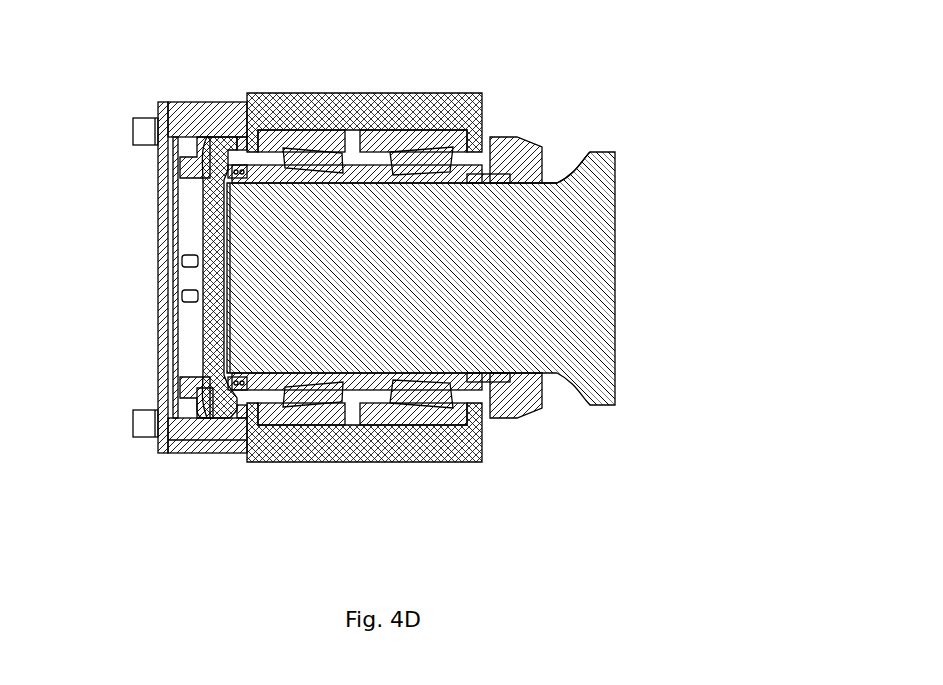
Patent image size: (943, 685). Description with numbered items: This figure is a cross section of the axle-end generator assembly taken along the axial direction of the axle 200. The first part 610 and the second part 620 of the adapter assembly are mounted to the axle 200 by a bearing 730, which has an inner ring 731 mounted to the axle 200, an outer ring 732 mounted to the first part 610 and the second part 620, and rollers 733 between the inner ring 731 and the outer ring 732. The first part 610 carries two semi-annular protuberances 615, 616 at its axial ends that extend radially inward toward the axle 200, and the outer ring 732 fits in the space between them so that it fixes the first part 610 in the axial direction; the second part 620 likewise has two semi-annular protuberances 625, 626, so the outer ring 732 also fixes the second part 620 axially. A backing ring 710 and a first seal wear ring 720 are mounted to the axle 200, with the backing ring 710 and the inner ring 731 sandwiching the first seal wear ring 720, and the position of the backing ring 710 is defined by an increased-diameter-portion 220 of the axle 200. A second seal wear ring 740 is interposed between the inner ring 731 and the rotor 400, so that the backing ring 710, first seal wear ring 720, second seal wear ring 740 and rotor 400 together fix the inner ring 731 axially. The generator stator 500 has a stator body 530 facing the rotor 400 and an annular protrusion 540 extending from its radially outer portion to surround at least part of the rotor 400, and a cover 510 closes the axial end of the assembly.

The axle 200 is at (560, 278).
The increased-diameter-portion 220 is at (531, 380).
The rotor 400 is at (205, 323).
The stator 500 is at (183, 130).
The cover 510 is at (173, 252).
The stator body 530 is at (187, 397).
The annular protrusion 540 is at (215, 440).
The first part 610 is at (335, 445).
The semi-annular protuberance 615 is at (474, 410).
The semi-annular protuberance 616 is at (255, 418).
The second part 620 is at (397, 112).
The semi-annular protuberance 625 is at (472, 137).
The semi-annular protuberance 626 is at (255, 137).
The backing ring 710 is at (527, 178).
The first seal wear ring 720 is at (542, 179).
The bearing 730 is at (325, 147).
The inner ring 731 is at (297, 405).
The outer ring 732 is at (389, 405).
The rollers 733 is at (430, 390).
The second seal wear ring 740 is at (207, 180).